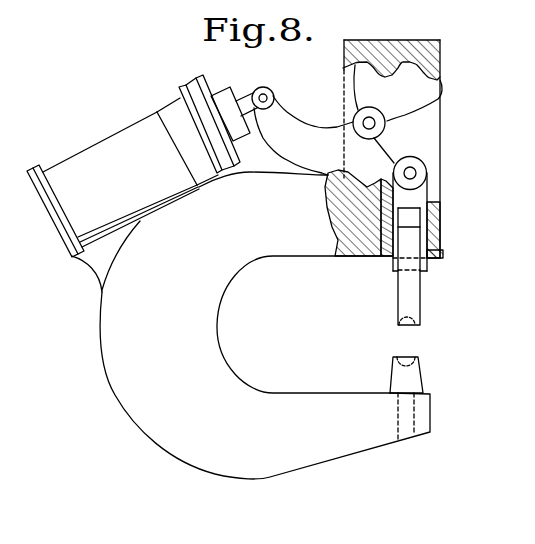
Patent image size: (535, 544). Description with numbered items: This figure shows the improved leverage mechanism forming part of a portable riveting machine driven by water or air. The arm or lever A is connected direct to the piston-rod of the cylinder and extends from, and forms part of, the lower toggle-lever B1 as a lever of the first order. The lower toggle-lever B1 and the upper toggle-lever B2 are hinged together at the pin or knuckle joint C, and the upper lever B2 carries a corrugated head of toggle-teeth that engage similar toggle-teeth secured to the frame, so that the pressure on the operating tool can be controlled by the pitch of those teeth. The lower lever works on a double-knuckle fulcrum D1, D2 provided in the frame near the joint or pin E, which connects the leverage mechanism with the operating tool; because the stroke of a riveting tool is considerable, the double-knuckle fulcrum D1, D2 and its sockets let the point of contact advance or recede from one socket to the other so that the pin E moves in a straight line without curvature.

The arm or lever A is at (303, 135).
The lower toggle-lever B1 is at (375, 153).
The upper toggle-lever B2 is at (398, 93).
The pin or knuckle joint C is at (372, 124).
The knuckle of the double-knuckle fulcrum D1 is at (356, 168).
The knuckle of the double-knuckle fulcrum D2 is at (381, 184).
The joint or pin E is at (414, 173).